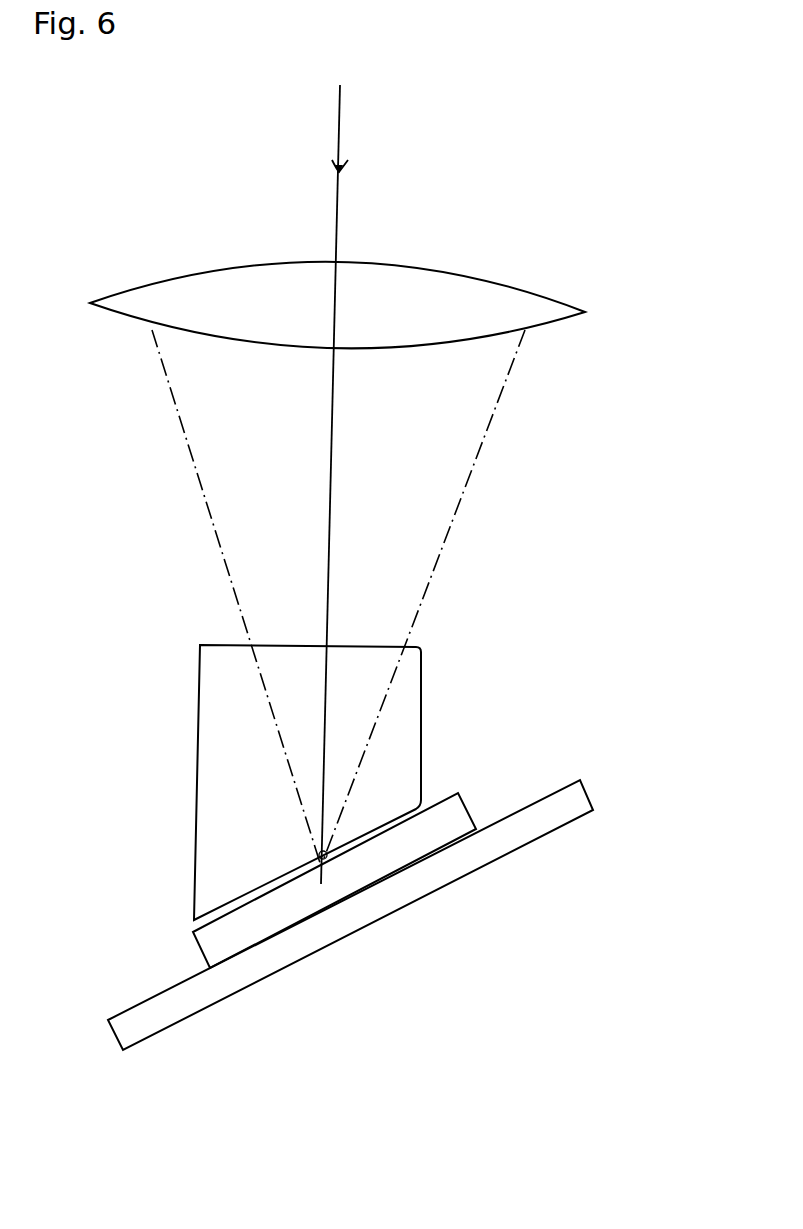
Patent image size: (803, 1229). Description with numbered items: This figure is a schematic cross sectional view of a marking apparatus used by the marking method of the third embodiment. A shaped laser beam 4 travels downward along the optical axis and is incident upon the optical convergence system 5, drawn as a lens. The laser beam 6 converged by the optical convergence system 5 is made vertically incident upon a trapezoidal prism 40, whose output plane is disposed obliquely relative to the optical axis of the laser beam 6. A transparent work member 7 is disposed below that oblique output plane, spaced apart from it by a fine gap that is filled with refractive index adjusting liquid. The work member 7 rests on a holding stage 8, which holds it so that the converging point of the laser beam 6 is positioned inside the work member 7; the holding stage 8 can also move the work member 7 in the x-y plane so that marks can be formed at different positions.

The shaped laser beam 4 is at (340, 137).
The optical convergence system 5 is at (538, 292).
The laser beam 6 is at (483, 432).
The work member 7 is at (465, 802).
The holding stage 8 is at (593, 800).
The trapezoidal prism 40 is at (198, 672).